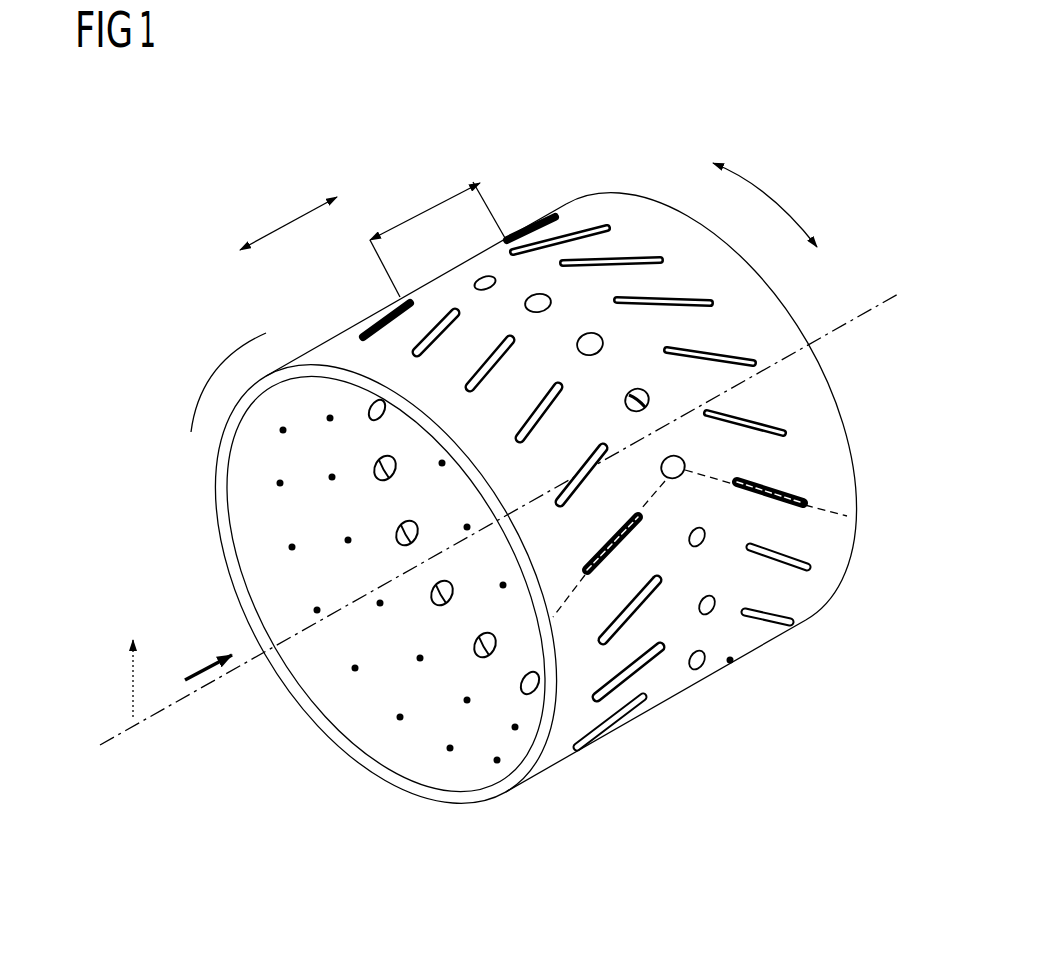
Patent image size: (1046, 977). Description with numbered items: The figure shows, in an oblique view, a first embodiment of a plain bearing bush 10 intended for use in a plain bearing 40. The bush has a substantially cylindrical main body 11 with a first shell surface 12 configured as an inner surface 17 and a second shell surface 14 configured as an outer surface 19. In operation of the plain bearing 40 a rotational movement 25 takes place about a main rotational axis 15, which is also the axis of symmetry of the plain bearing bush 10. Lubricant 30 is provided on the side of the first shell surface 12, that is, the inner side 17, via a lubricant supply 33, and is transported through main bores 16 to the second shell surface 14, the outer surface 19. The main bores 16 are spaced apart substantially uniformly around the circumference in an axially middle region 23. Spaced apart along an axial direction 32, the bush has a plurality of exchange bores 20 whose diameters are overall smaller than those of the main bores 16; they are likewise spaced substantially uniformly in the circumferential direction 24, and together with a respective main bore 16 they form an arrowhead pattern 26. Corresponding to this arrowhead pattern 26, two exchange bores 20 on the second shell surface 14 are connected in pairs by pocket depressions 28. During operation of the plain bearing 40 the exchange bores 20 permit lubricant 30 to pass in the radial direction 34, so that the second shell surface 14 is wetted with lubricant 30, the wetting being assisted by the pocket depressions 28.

The plain bearing bush 10 is at (475, 481).
The main body 11 is at (623, 207).
The first shell surface 12 is at (376, 580).
The second shell surface 14 is at (750, 406).
The main rotational axis 15 is at (150, 723).
The main bores 16 is at (539, 295).
The inner surface 17 is at (353, 722).
The outer surface 19 is at (800, 390).
The exchange bores 20 is at (612, 710).
The axially middle region 23 is at (427, 210).
The circumferential direction 24 is at (767, 195).
The rotational movement 25 is at (225, 355).
The arrowhead pattern 26 is at (817, 510).
The pocket depressions 28 is at (783, 567).
The lubricant 30 is at (617, 357).
The axial direction 32 is at (287, 222).
The lubricant supply 33 is at (207, 663).
The radial direction 34 is at (130, 687).
The plain bearing 40 is at (176, 216).